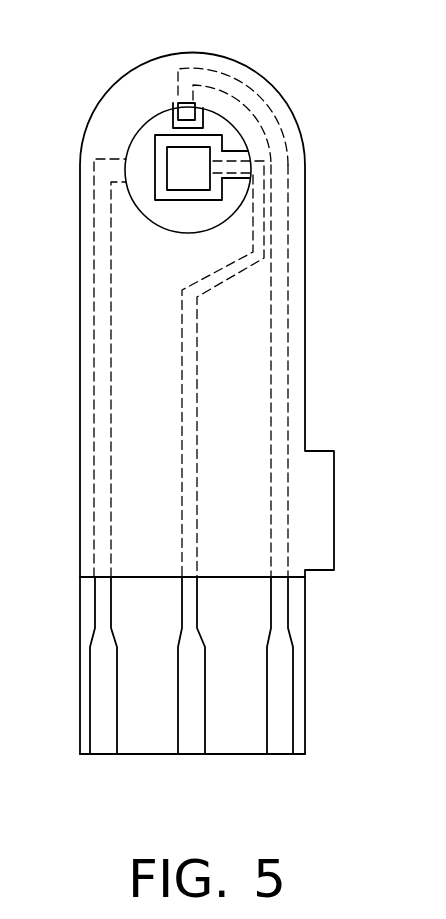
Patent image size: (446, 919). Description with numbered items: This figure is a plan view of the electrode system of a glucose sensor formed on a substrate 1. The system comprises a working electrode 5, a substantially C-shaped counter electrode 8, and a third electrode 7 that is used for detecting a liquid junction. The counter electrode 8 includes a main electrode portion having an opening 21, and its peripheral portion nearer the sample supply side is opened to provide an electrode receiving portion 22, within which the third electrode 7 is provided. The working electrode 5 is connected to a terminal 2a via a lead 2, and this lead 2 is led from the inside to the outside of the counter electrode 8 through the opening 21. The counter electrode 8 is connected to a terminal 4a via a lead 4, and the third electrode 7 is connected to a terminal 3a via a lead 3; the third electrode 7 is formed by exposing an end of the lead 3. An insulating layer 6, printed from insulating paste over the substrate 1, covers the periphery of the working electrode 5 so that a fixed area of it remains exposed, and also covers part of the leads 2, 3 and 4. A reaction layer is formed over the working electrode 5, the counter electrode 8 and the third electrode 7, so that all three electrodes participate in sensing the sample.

The substrate 1 is at (232, 742).
The lead 2 is at (198, 507).
The lead 3 is at (288, 401).
The lead 4 is at (92, 376).
The working electrode 5 is at (178, 163).
The insulating layer 6 is at (235, 342).
The third electrode 7 is at (186, 103).
The counter electrode 8 is at (210, 112).
The opening 21 is at (258, 157).
The electrode receiving portion 22 is at (226, 92).
The terminal 2a is at (186, 742).
The terminal 3a is at (278, 742).
The terminal 4a is at (102, 743).